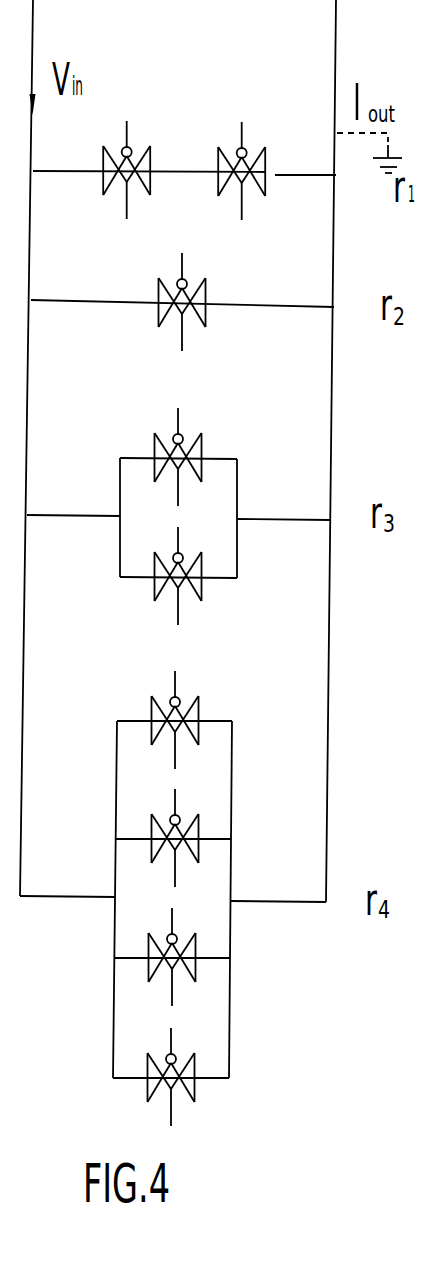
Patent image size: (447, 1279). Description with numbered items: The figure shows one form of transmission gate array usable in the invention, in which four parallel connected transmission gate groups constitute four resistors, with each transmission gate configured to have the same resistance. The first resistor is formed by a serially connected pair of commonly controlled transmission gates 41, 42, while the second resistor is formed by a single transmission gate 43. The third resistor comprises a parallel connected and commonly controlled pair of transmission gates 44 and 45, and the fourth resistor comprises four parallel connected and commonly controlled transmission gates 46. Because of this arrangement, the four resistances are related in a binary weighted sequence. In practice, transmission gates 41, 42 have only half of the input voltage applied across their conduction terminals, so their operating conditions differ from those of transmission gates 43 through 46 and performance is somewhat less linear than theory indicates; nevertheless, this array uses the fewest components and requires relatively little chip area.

The transmission gate 41 is at (140, 146).
The transmission gate 42 is at (263, 146).
The transmission gate 43 is at (203, 279).
The transmission gate 44 is at (202, 433).
The transmission gate 45 is at (201, 601).
The transmission gates 46 is at (199, 697).